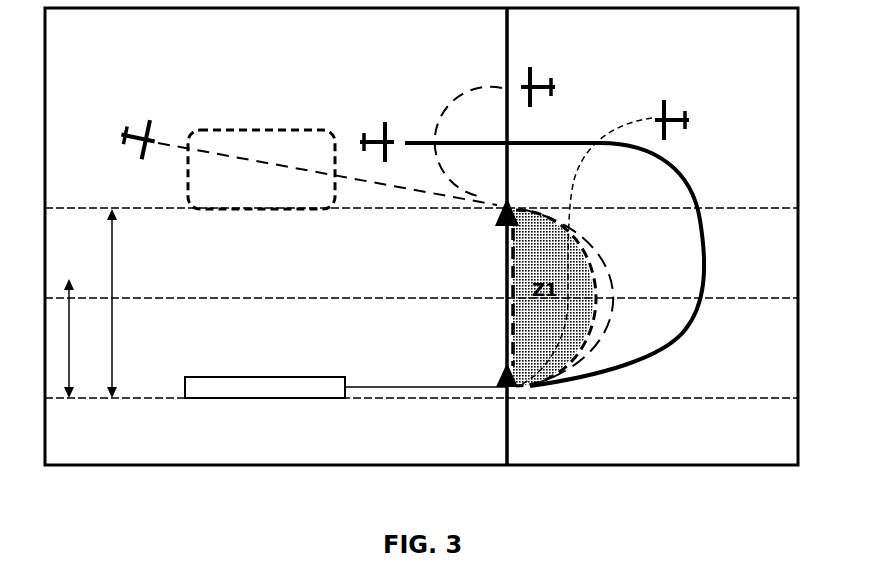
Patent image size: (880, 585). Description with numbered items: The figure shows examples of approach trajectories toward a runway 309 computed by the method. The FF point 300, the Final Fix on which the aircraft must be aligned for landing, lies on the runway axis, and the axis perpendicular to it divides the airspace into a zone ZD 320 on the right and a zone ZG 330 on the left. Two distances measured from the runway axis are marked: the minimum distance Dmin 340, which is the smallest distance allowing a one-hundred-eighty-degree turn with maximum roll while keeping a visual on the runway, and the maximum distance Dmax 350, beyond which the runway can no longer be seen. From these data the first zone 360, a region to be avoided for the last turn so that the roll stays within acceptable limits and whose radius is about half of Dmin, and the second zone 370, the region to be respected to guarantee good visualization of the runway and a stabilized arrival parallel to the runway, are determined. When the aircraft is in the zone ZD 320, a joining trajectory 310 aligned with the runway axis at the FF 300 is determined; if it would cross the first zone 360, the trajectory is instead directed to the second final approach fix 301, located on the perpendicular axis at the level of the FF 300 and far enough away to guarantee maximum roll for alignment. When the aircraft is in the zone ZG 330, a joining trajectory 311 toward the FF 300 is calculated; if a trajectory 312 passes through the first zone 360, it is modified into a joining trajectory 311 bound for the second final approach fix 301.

The FF point 300 is at (518, 405).
The FAF2 point 301 is at (498, 221).
The runway 309 is at (241, 376).
The joining trajectory 310 is at (682, 187).
The joining trajectory 311 is at (456, 108).
The trajectory 312 is at (616, 130).
The zone ZD 320 is at (626, 30).
The zone ZG 330 is at (237, 30).
The minimum distance Dmin 340 is at (70, 349).
The maximum distance Dmax 350 is at (117, 264).
The zone Z1 360 is at (505, 308).
The zone Z2 370 is at (280, 131).